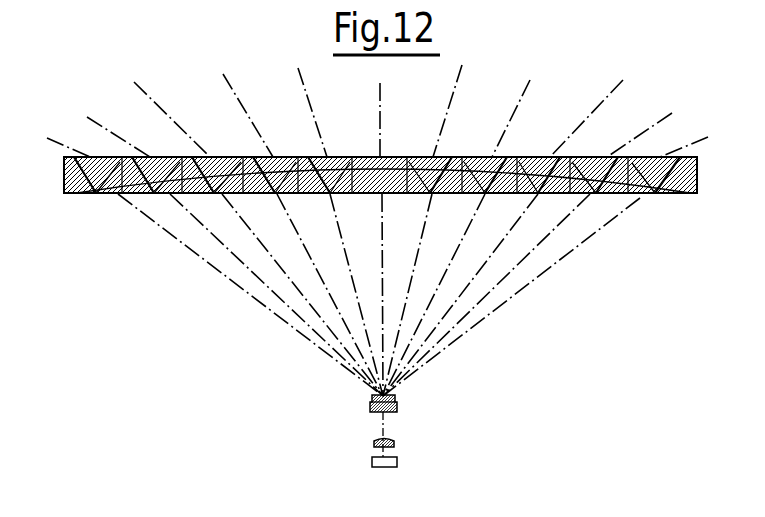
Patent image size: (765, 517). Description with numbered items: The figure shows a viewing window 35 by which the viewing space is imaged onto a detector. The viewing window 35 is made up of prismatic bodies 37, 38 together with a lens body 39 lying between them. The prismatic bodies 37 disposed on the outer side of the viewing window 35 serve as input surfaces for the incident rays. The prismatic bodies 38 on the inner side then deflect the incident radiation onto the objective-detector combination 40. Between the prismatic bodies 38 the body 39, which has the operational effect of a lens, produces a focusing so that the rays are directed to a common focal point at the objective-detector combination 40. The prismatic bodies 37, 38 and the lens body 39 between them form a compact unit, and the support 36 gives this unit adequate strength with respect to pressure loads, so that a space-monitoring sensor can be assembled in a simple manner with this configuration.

The viewing window 35 is at (544, 108).
The support 36 is at (697, 197).
The prismatic bodies 37 is at (650, 153).
The prismatic bodies 38 is at (645, 197).
The lens body 39 is at (663, 153).
The objective-detector combination 40 is at (405, 395).